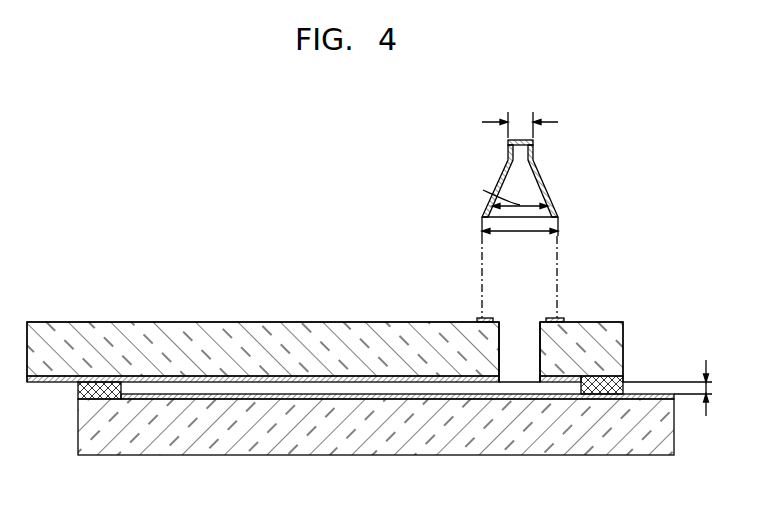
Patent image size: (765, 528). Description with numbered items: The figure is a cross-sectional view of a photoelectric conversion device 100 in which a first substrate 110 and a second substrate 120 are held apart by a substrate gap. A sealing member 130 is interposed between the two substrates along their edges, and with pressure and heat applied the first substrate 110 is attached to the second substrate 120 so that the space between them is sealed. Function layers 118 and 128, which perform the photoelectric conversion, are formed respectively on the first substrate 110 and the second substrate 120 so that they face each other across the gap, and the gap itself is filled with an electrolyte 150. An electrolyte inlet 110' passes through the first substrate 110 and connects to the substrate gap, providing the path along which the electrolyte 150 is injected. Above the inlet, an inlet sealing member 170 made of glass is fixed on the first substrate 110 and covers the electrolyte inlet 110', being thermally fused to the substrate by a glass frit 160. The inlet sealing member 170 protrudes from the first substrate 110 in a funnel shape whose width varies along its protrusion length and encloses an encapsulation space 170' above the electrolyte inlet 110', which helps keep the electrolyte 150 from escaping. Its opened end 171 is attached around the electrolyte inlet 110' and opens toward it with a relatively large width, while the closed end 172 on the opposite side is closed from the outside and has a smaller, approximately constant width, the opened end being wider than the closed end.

The photoelectric conversion device 100 is at (136, 234).
The first substrate 110 is at (360, 320).
The electrolyte inlet 110' is at (485, 320).
The function layer 118 is at (248, 378).
The second substrate 120 is at (345, 440).
The function layer 128 is at (257, 392).
The sealing member 130 is at (599, 388).
The electrolyte 150 is at (414, 396).
The glass frit 160 is at (565, 321).
The inlet sealing member 170 is at (503, 204).
The encapsulation space 170' is at (548, 184).
The opened end 171 is at (558, 218).
The closed end 172 is at (533, 143).